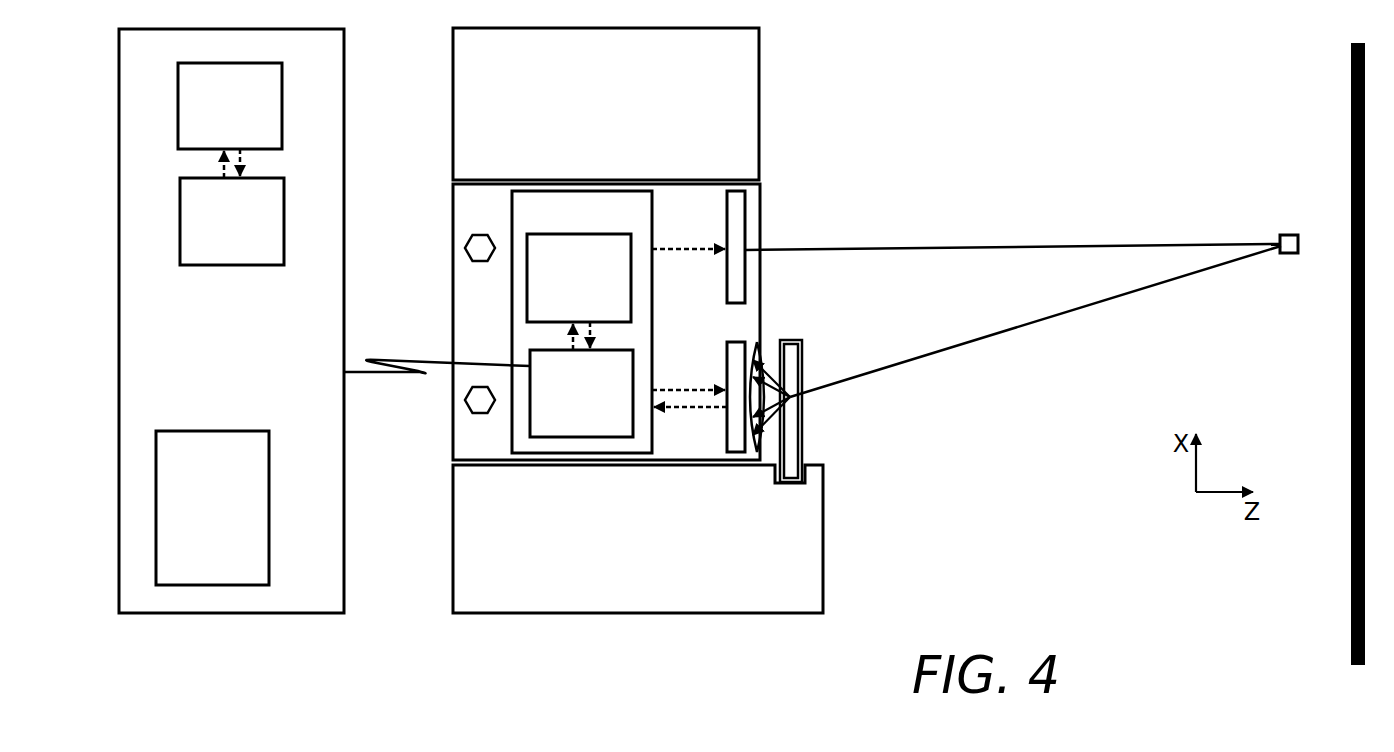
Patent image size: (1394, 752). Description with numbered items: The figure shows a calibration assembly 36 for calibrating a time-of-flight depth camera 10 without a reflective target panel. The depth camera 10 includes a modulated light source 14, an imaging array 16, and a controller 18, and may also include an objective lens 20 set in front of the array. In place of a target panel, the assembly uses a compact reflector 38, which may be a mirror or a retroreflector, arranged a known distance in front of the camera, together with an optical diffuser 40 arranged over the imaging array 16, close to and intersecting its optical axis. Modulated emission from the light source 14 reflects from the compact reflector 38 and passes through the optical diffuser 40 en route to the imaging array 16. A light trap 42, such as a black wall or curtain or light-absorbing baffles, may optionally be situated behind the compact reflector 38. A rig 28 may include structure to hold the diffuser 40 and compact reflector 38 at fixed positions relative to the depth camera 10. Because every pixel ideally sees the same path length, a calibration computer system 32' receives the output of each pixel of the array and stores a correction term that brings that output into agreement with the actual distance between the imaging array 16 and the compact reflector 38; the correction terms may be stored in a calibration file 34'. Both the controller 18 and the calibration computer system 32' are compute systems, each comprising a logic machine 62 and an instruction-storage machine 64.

The depth camera 10 is at (468, 341).
The modulated light source 14 is at (745, 212).
The imaging array 16 is at (728, 352).
The controller 18 is at (568, 227).
The objective lens 20 is at (766, 350).
The rig 28 is at (593, 116).
The calibration computer system 32' is at (324, 321).
The calibration file 34' is at (212, 508).
The calibration assembly 36 is at (928, 94).
The compact reflector 38 is at (1290, 253).
The optical diffuser 40 is at (802, 433).
The light trap 42 is at (1352, 145).
The logic machine 62 is at (218, 121).
The instruction-storage machine 64 is at (220, 237).